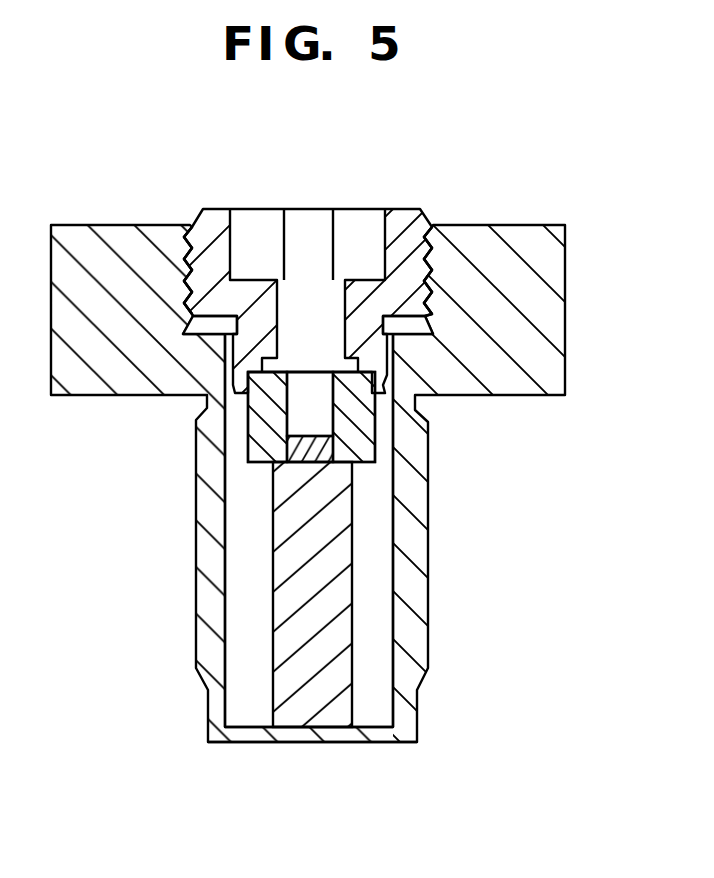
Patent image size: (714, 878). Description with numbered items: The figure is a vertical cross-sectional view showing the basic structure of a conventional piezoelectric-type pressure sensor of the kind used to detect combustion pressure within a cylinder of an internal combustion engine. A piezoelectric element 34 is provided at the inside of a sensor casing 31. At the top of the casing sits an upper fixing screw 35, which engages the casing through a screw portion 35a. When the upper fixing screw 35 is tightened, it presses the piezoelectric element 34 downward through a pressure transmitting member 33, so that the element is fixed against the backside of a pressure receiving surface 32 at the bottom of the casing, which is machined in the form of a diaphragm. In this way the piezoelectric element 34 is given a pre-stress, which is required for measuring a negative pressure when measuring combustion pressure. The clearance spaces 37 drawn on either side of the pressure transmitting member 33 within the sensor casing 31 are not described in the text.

The sensor casing 31 is at (196, 556).
The pressure receiving surface 32 is at (345, 743).
The pressure transmitting member 33 is at (352, 575).
The piezoelectric element 34 is at (372, 428).
The upper fixing screw 35 is at (358, 208).
The screw portion 35a is at (183, 221).
The gap 37 is at (370, 662).